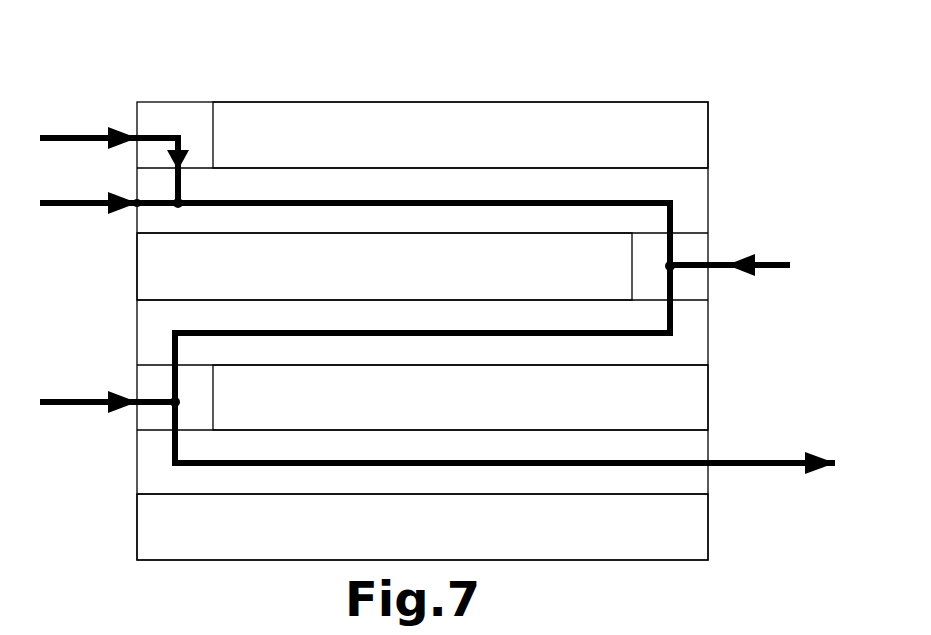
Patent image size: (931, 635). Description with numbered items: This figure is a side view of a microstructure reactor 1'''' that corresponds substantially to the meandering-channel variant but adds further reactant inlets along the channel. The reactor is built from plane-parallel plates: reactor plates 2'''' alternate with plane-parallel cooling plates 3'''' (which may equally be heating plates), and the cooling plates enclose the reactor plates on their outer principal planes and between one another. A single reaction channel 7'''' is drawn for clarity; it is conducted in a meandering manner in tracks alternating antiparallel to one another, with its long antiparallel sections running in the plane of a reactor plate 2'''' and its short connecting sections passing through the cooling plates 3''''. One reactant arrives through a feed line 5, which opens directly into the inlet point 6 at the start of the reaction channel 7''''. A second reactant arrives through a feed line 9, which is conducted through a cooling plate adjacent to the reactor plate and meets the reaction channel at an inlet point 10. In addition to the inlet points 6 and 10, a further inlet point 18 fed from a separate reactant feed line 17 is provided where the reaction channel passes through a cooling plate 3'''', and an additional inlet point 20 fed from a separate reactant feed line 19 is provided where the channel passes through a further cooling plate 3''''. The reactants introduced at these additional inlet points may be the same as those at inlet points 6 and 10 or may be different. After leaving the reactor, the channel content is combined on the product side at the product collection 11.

The reactor 1'''' is at (422, 285).
The reactor plate 2'''' is at (484, 330).
The cooling plate 3'''' is at (484, 326).
The reaction channel 7'''' is at (486, 236).
The feed line 5 is at (65, 210).
The inlet point 6 is at (137, 207).
The feed line 9 is at (75, 135).
The inlet point 10 is at (180, 203).
The product collection 11 is at (777, 460).
The reactant feed line 17 is at (770, 263).
The inlet point 18 is at (670, 267).
The reactant feed line 19 is at (58, 407).
The inlet point 20 is at (175, 405).